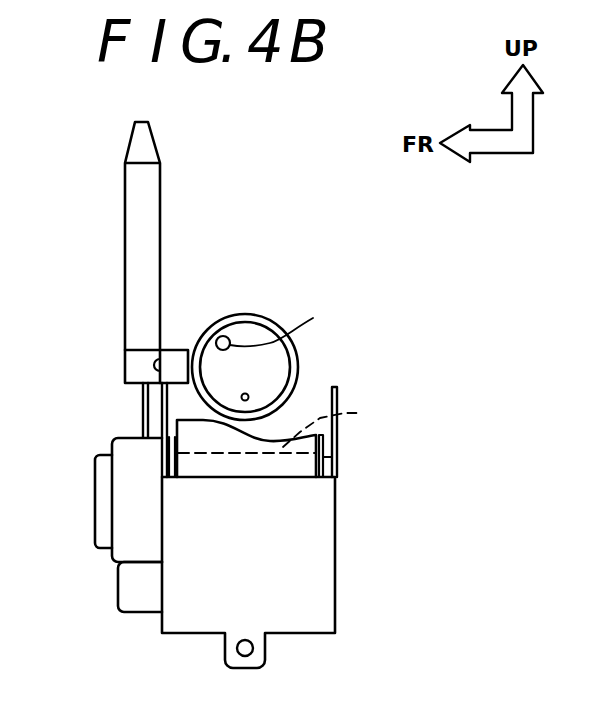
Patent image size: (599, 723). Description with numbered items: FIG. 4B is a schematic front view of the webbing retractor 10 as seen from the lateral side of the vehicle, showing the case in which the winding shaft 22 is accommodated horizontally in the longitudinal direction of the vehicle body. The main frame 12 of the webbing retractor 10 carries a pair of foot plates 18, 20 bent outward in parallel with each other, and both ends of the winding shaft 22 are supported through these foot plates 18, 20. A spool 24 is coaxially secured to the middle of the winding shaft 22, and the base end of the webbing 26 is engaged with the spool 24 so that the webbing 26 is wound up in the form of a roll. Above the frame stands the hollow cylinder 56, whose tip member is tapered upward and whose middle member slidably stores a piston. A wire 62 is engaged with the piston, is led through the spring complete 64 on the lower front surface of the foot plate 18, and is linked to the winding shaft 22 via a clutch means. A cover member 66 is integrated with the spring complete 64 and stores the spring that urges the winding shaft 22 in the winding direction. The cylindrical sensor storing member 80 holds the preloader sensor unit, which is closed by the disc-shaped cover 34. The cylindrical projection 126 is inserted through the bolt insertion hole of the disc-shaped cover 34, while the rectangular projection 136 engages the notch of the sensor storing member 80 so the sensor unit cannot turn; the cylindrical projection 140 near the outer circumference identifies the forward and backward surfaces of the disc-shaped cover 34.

The webbing retractor 10 is at (88, 238).
The main frame 12 is at (317, 636).
The foot plate 18 is at (162, 416).
The foot plate 20 is at (337, 437).
The winding shaft 22 is at (340, 423).
The spool 24 is at (337, 459).
The webbing 26 is at (272, 441).
The disc-shaped cover 34 is at (256, 318).
The cylinder 56 is at (125, 278).
The wire 62 is at (143, 399).
The spring complete 64 is at (119, 592).
The cover member 66 is at (95, 490).
The sensor storing member 80 is at (281, 326).
The cylindrical projection 126 is at (294, 324).
The rectangular projection 136 is at (215, 336).
The cylindrical projection 140 is at (247, 394).